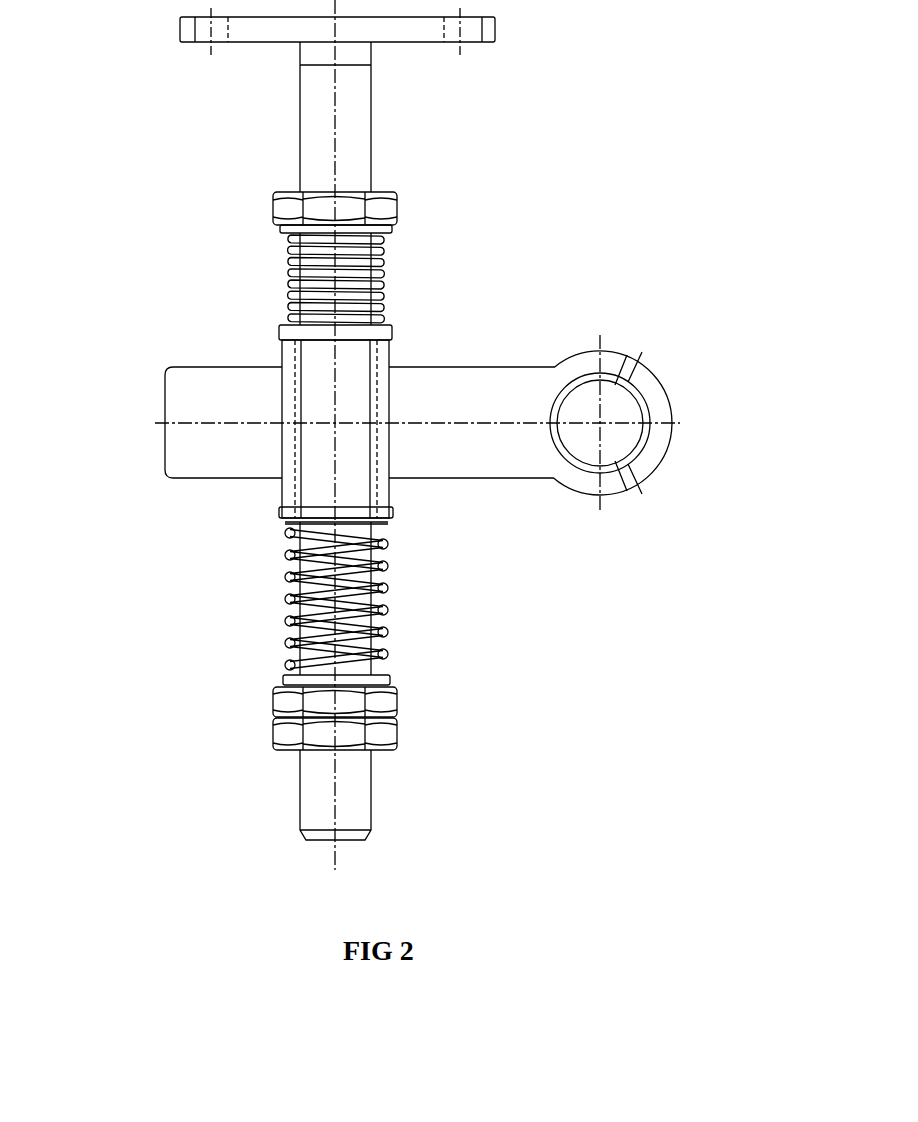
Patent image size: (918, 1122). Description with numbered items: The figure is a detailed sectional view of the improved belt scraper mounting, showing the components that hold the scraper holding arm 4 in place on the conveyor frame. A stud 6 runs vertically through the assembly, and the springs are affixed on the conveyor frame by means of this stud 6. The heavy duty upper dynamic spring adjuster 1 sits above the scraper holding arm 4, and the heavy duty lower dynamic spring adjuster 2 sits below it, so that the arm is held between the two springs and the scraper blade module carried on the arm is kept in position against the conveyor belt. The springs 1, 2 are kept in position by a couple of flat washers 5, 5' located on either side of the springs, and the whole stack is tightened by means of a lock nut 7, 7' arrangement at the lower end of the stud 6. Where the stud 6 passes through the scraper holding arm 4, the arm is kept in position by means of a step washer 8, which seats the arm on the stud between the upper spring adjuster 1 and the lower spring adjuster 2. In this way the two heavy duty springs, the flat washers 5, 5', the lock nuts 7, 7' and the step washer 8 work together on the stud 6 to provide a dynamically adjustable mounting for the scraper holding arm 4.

The heavy duty upper dynamic spring adjuster 1 is at (290, 272).
The heavy duty lower dynamic spring adjuster 2 is at (287, 606).
The scraper holding arm 4 is at (420, 425).
The flat washer 5 is at (431, 256).
The flat washer 5' is at (415, 596).
The stud 6 is at (372, 112).
The lock nut 7 is at (279, 708).
The lock nut 7' is at (213, 736).
The step washer 8 is at (362, 351).